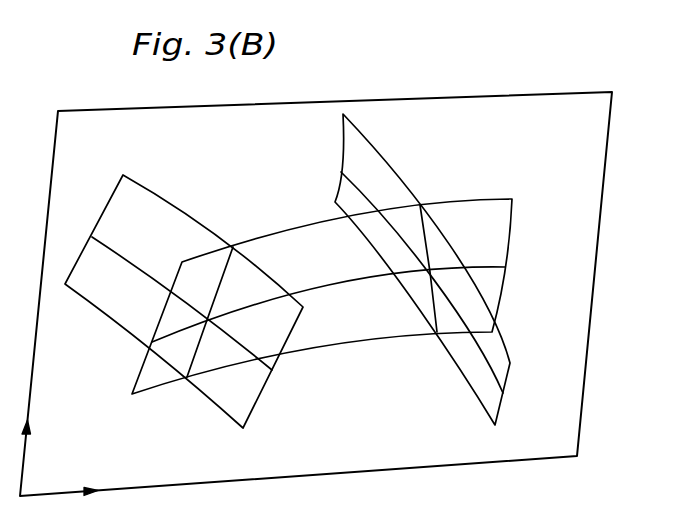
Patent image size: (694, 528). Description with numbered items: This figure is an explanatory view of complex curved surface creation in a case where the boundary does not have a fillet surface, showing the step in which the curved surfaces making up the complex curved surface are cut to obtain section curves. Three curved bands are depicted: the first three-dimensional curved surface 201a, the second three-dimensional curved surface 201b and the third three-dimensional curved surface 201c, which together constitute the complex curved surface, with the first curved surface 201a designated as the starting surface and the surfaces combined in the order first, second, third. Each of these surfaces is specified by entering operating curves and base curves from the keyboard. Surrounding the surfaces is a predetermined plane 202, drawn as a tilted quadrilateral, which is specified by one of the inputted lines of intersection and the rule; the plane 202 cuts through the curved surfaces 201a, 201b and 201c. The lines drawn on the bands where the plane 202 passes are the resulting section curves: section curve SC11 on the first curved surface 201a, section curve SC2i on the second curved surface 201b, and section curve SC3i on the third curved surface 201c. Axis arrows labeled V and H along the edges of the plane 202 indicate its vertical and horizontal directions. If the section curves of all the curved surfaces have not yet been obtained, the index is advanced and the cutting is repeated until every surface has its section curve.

The predetermined plane 202 is at (578, 241).
The first three-dimensional curved surface 201a is at (221, 391).
The second three-dimensional curved surface 201b is at (313, 333).
The third three-dimensional curved surface 201c is at (492, 400).
The section curve of the first curved surface SC11 is at (100, 225).
The section curve of the second curved surface SC2i is at (381, 279).
The section curve of the third curved surface SC3i is at (490, 372).
The vertical axis V is at (16, 424).
The horizontal axis H is at (91, 503).